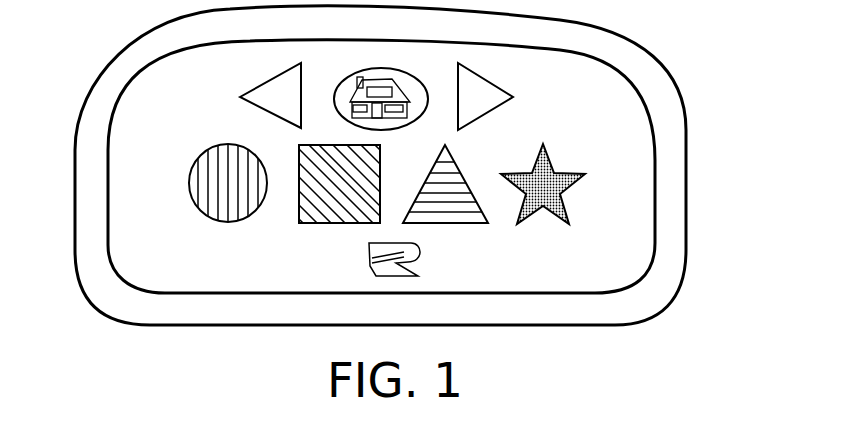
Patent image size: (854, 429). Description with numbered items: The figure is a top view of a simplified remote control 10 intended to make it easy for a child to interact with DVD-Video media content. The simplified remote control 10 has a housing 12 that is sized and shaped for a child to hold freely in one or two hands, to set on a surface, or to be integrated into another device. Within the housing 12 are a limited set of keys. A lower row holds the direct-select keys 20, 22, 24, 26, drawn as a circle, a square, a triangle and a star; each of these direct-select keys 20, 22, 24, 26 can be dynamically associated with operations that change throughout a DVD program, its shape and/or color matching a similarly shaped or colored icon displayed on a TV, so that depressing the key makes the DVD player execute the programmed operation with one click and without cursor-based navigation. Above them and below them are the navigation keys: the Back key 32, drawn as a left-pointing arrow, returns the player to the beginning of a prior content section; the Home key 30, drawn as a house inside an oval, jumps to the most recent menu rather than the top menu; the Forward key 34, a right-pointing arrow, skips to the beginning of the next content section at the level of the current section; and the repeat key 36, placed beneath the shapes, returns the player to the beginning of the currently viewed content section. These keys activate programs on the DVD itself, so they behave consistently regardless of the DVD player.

The simplified remote control 10 is at (261, 346).
The housing 12 is at (134, 320).
The direct-select key 20 is at (193, 204).
The direct-select key 22 is at (335, 224).
The direct-select key 24 is at (437, 225).
The direct-select key 26 is at (520, 220).
The Home key 30 is at (338, 92).
The Back key 32 is at (260, 87).
The Forward key 34 is at (503, 87).
The repeat key 36 is at (412, 270).